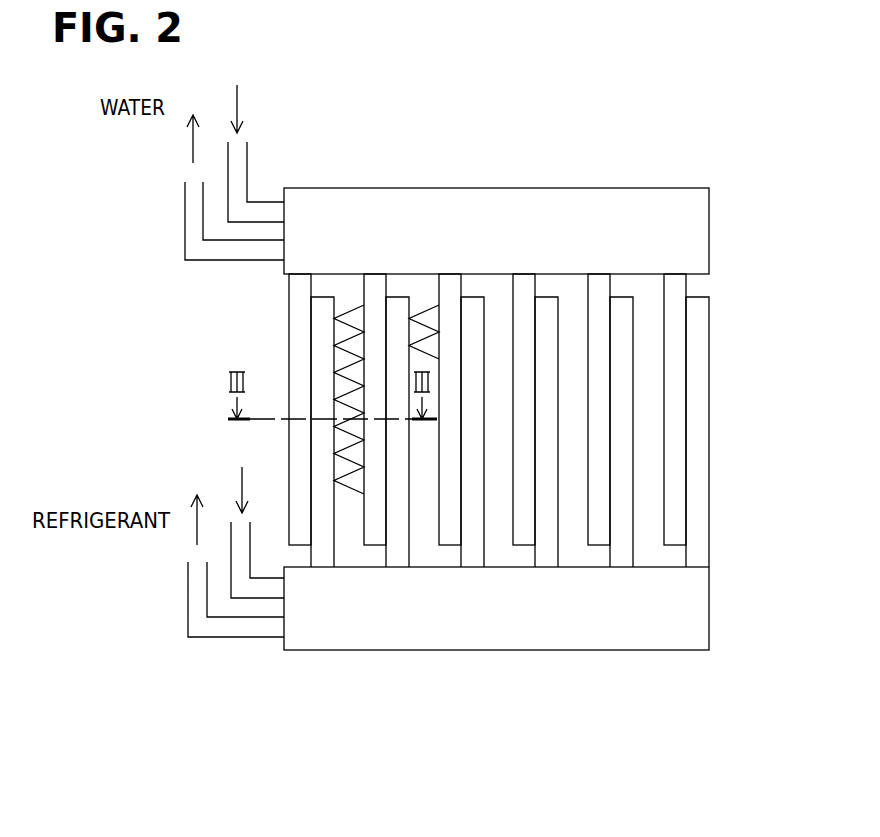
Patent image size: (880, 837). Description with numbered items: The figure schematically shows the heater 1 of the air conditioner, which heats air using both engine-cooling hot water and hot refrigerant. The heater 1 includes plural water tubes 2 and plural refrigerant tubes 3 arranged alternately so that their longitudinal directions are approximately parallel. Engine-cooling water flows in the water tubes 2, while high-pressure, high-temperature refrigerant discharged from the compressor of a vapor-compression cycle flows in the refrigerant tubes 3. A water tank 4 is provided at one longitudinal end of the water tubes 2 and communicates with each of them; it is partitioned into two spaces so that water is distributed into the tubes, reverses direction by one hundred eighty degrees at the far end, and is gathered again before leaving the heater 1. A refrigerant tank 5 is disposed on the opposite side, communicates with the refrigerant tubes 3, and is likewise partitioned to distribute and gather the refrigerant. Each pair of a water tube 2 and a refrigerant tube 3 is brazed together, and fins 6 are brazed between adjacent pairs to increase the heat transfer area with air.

The heater 1 is at (718, 181).
The water tubes 2 is at (294, 283).
The refrigerant tubes 3 is at (324, 558).
The water tank 4 is at (631, 187).
The refrigerant tank 5 is at (660, 625).
The fins 6 is at (345, 325).